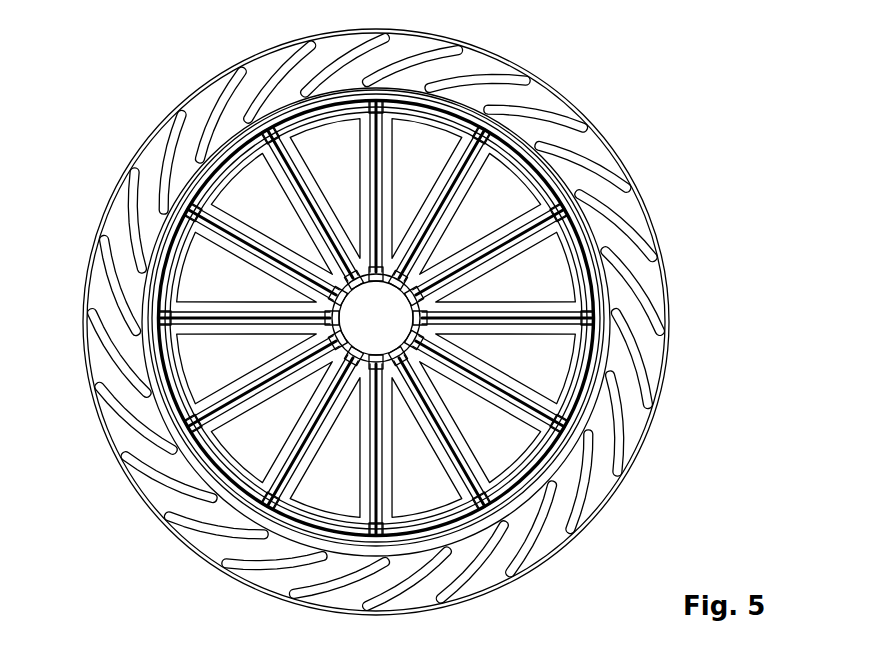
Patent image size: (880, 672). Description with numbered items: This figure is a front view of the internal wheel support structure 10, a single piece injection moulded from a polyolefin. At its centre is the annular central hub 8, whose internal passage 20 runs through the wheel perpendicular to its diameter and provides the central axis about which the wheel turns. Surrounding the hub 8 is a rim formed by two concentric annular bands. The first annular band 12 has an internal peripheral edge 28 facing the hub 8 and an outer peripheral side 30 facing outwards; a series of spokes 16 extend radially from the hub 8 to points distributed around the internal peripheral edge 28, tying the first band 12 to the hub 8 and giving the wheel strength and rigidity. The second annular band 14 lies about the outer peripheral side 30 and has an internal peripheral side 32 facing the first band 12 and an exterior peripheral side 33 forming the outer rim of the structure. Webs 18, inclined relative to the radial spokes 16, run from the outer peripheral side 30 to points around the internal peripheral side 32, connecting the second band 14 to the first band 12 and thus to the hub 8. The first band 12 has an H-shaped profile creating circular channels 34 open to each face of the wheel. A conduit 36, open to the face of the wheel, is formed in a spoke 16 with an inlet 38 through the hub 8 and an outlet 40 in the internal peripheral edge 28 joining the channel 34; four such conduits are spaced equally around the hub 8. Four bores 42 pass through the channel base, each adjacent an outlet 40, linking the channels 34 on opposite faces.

The central hub 8 is at (392, 275).
The internal wheel support structure 10 is at (652, 104).
The first annular band 12 is at (563, 187).
The second annular band 14 is at (653, 228).
The spokes 16 is at (277, 178).
The webs 18 is at (247, 567).
The internal passage 20 is at (337, 322).
The internal peripheral edge 28 is at (233, 193).
The outer peripheral side 30 is at (603, 360).
The internal peripheral side 32 is at (533, 93).
The exterior peripheral side 33 is at (88, 263).
The channels 34 is at (590, 280).
The conduit 36 is at (452, 463).
The inlet 38 is at (391, 354).
The outlet 40 is at (197, 418).
The bores 42 is at (478, 518).